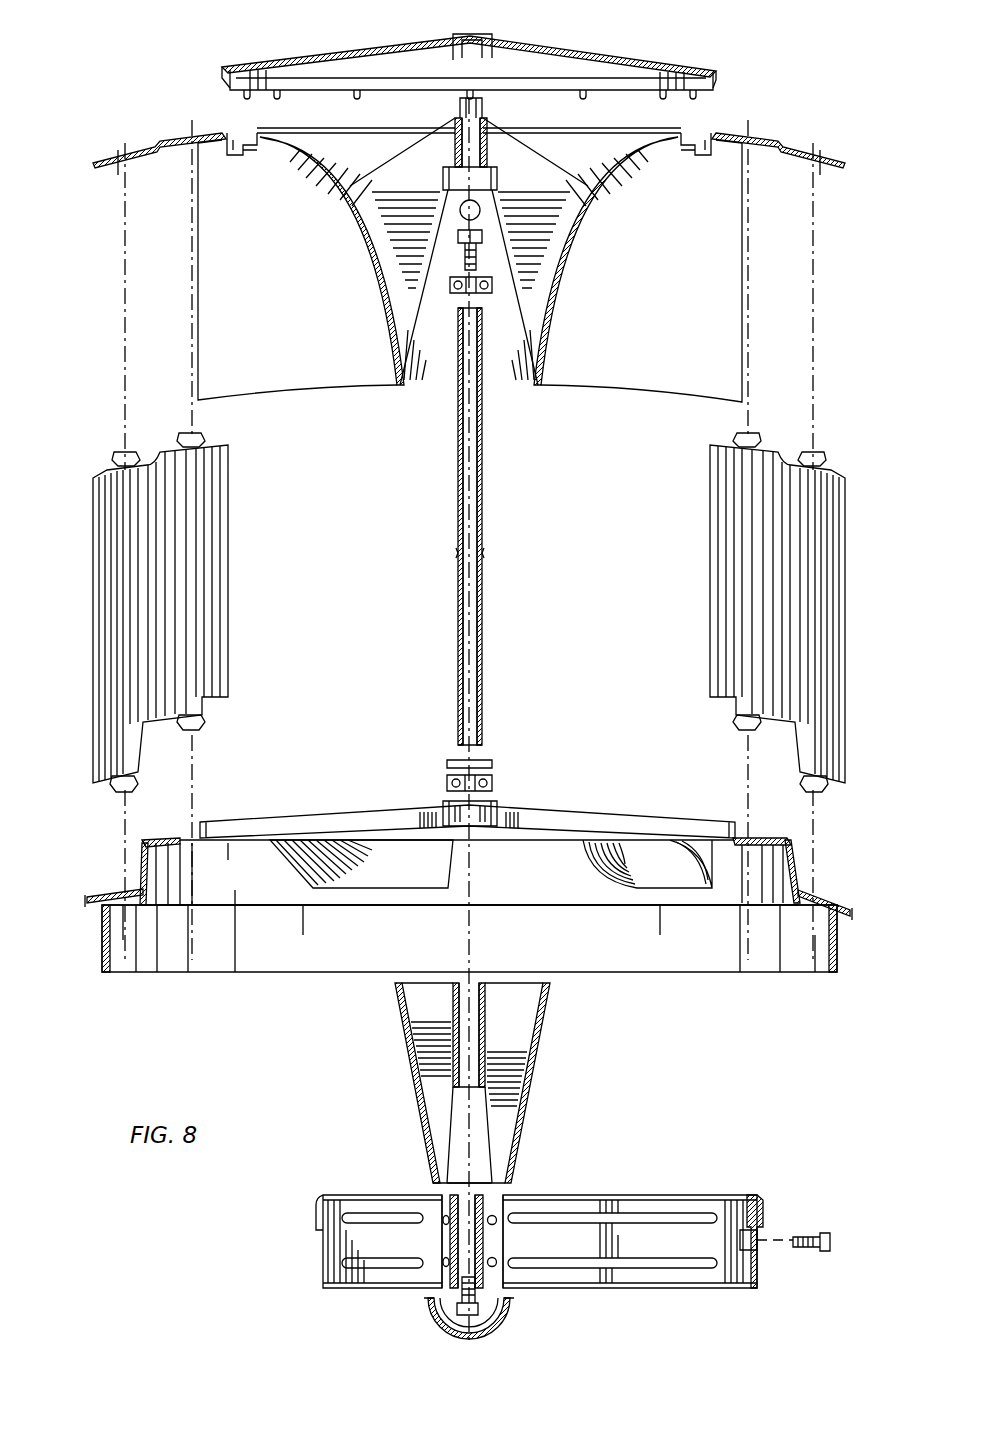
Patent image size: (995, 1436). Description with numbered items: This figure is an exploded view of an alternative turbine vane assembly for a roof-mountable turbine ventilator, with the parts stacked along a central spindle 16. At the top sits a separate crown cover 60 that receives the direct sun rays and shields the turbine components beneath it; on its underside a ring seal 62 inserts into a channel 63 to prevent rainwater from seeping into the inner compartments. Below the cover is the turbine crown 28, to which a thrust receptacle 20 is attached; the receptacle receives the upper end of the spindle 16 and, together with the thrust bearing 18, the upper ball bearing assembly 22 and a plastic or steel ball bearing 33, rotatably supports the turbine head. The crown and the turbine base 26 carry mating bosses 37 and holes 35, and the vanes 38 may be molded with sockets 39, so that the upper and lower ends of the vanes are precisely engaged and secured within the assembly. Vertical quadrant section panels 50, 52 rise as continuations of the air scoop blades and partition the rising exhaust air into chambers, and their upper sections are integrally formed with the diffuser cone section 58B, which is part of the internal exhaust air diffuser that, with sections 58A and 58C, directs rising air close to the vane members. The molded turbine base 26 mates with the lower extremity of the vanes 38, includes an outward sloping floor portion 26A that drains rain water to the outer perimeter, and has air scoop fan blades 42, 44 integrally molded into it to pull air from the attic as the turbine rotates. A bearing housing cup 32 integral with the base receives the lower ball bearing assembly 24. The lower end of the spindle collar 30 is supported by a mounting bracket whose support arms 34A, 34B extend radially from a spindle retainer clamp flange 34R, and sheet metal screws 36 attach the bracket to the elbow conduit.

The spindle 16 is at (483, 446).
The thrust bearing 18 is at (490, 150).
The thrust receptacle 20 is at (455, 140).
The upper ball bearing assembly 22 is at (455, 297).
The lower ball bearing assembly 24 is at (447, 783).
The turbine base 26 is at (145, 844).
The floor portion 26A is at (788, 838).
The turbine crown 28 is at (830, 158).
The spindle collar 30 is at (488, 1050).
The bearing housing cup 32 is at (497, 806).
The ball bearing 33 is at (481, 210).
The support arm 34A is at (345, 1290).
The support arm 34B is at (713, 1290).
The spindle retainer clamp flange 34R is at (485, 1230).
The holes 35 is at (122, 158).
The sheet metal screws 36 is at (827, 1232).
The bosses 37 is at (248, 97).
The vanes 38 is at (93, 528).
The sockets 39 is at (245, 153).
The air scoop fan blade 42 is at (377, 877).
The air scoop fan blade 44 is at (597, 860).
The quadrant section panel 50 is at (625, 262).
The quadrant section panel 52 is at (277, 274).
The exhaust air diffuser section 58A is at (406, 1066).
The diffuser cone section 58B is at (380, 318).
The exhaust air diffuser section 58C is at (430, 1302).
The crown cover 60 is at (607, 48).
The ring seal 62 is at (228, 80).
The channel 63 is at (232, 134).